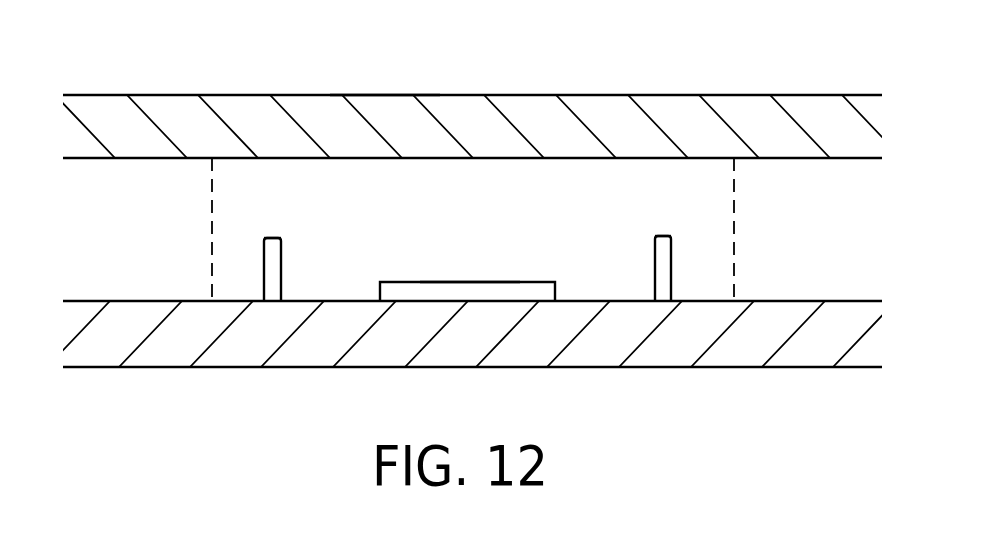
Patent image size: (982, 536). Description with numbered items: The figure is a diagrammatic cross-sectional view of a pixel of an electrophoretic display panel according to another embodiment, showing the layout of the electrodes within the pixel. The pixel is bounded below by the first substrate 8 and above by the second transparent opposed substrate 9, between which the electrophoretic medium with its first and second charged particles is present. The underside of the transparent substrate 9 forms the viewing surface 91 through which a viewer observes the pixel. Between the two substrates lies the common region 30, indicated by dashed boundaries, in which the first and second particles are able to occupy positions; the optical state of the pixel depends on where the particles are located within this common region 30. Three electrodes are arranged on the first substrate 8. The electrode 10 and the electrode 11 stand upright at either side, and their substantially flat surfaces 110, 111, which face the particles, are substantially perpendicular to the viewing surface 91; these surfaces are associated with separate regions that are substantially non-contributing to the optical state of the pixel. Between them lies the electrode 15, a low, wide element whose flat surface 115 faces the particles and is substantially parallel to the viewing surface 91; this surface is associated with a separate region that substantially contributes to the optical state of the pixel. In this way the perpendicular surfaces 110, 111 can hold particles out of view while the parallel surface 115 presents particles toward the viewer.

The first substrate 8 is at (107, 352).
The second transparent opposed substrate 9 is at (107, 105).
The viewing surface 91 is at (387, 93).
The common region 30 is at (212, 196).
The electrode 10 is at (270, 283).
The surface of electrode 110 is at (286, 257).
The electrode 11 is at (664, 282).
The surface of electrode 111 is at (651, 250).
The electrode 15 is at (526, 292).
The surface of electrode 115 is at (468, 280).